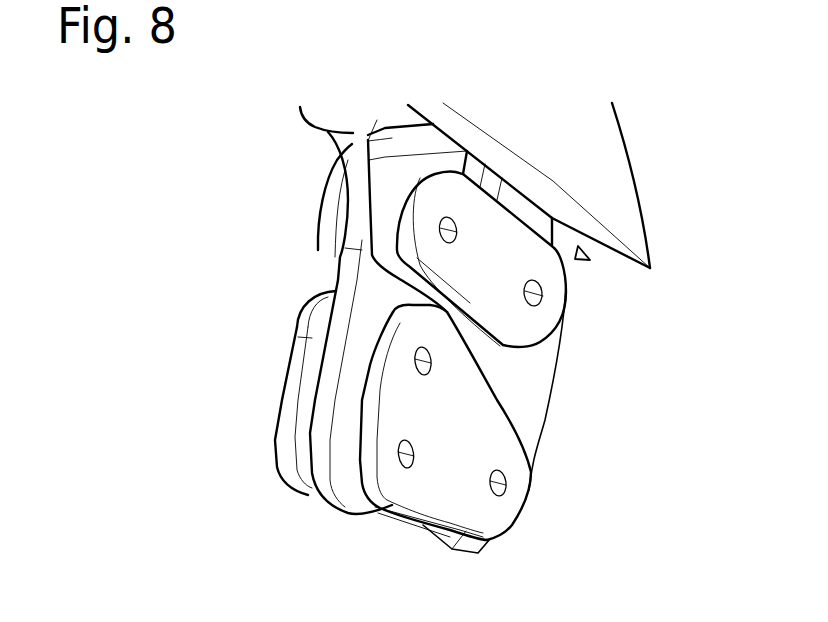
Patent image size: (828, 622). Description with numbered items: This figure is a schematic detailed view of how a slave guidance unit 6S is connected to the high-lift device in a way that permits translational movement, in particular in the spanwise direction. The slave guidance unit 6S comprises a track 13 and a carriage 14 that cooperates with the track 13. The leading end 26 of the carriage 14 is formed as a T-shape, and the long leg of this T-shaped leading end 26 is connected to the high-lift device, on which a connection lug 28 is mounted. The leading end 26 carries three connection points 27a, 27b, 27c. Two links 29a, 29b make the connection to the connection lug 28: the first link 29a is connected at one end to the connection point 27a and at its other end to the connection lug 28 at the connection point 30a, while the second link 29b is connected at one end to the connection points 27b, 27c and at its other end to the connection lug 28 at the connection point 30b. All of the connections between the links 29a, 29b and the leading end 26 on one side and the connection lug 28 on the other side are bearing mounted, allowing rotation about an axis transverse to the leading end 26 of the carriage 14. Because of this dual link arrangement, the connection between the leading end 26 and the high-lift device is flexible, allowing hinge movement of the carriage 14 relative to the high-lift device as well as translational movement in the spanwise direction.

The slave guidance unit 6S is at (269, 113).
The track 13 is at (583, 134).
The carriage 14 is at (333, 132).
The leading end 26 is at (380, 287).
The connection point 27a is at (446, 230).
The connection point 27b is at (422, 361).
The connection point 27c is at (406, 454).
The connection lug 28 is at (527, 396).
The first link 29a is at (548, 277).
The second link 29b is at (515, 483).
The connection point 30a is at (535, 293).
The connection point 30b is at (498, 484).